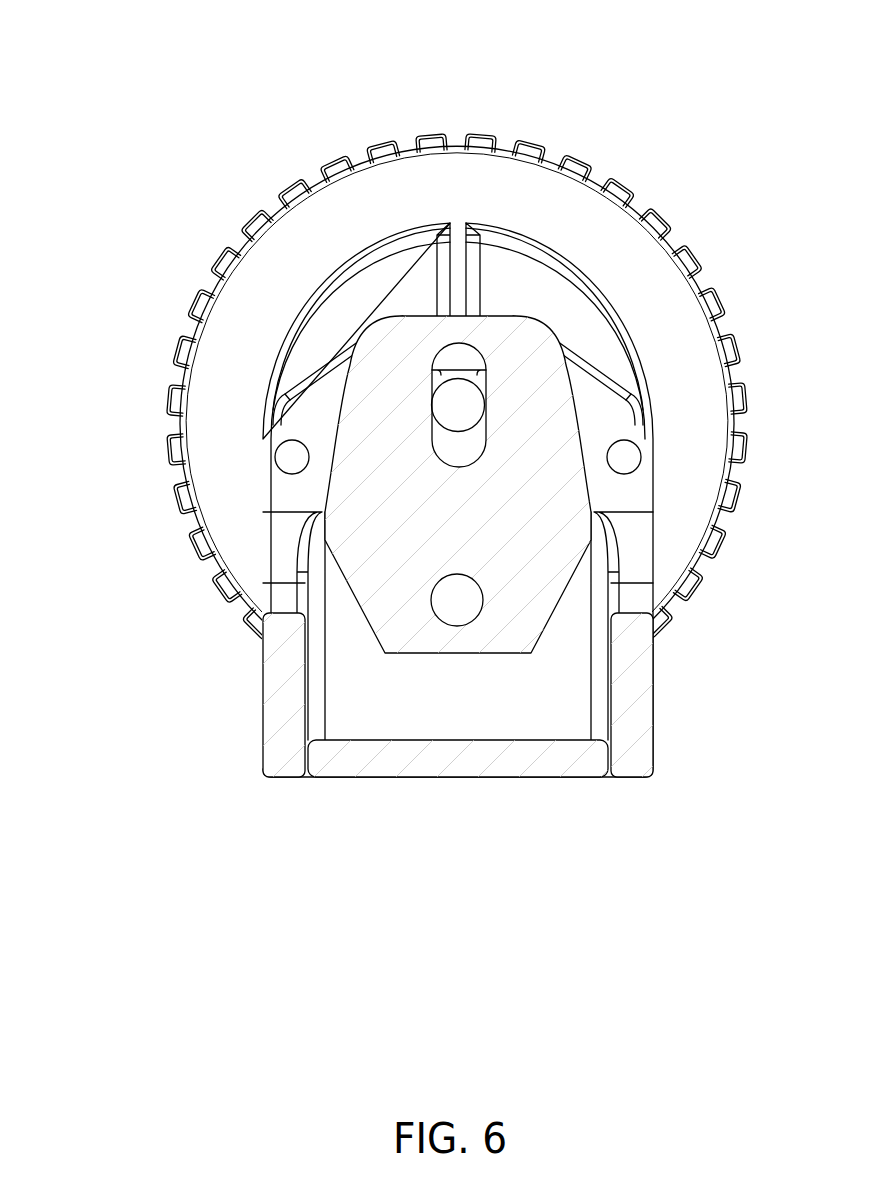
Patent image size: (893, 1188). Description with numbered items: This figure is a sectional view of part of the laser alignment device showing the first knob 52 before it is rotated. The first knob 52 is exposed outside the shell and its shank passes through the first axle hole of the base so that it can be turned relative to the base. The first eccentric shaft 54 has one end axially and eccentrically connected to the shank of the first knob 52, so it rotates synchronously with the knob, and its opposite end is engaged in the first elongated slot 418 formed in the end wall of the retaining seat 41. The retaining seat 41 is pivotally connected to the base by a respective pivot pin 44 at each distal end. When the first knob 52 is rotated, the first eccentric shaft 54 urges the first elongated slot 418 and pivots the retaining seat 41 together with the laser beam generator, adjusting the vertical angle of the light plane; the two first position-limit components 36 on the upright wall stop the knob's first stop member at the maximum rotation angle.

The first knob 52 is at (513, 188).
The first position-limit components 36 is at (275, 456).
The retaining seat 41 is at (533, 608).
The first elongated slot 418 is at (433, 430).
The first eccentric shaft 54 is at (457, 402).
The pivot pin 44 is at (457, 607).